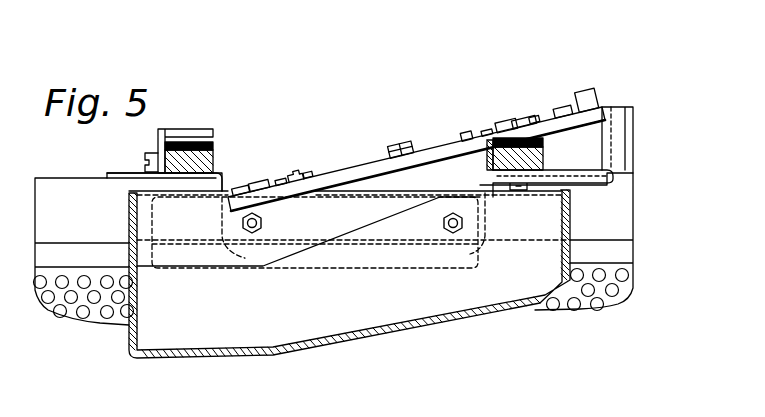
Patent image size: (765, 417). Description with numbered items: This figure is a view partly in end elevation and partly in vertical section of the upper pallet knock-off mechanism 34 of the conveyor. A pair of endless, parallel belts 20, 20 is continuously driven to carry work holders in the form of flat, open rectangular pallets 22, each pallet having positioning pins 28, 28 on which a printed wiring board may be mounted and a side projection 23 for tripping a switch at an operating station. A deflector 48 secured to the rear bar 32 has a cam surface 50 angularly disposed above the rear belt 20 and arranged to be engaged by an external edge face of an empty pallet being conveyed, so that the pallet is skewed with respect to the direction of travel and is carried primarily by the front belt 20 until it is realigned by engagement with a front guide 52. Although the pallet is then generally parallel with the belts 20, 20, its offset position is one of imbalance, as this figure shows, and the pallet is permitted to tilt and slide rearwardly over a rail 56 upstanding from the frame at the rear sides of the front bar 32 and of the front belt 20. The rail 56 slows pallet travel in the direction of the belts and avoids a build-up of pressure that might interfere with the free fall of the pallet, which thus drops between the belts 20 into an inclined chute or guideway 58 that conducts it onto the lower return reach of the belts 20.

The endless parallel belts 20 is at (216, 144).
The pallet 22 is at (338, 170).
The side projection 23 is at (592, 95).
The positioning pins 28 is at (303, 172).
The rear bar 32 is at (216, 162).
The upper pallet knock-off mechanism 34 is at (390, 76).
The deflector 48 is at (157, 140).
The cam surface 50 is at (193, 129).
The front guide 52 is at (617, 129).
The rail 56 is at (456, 186).
The inclined chute 58 is at (372, 337).